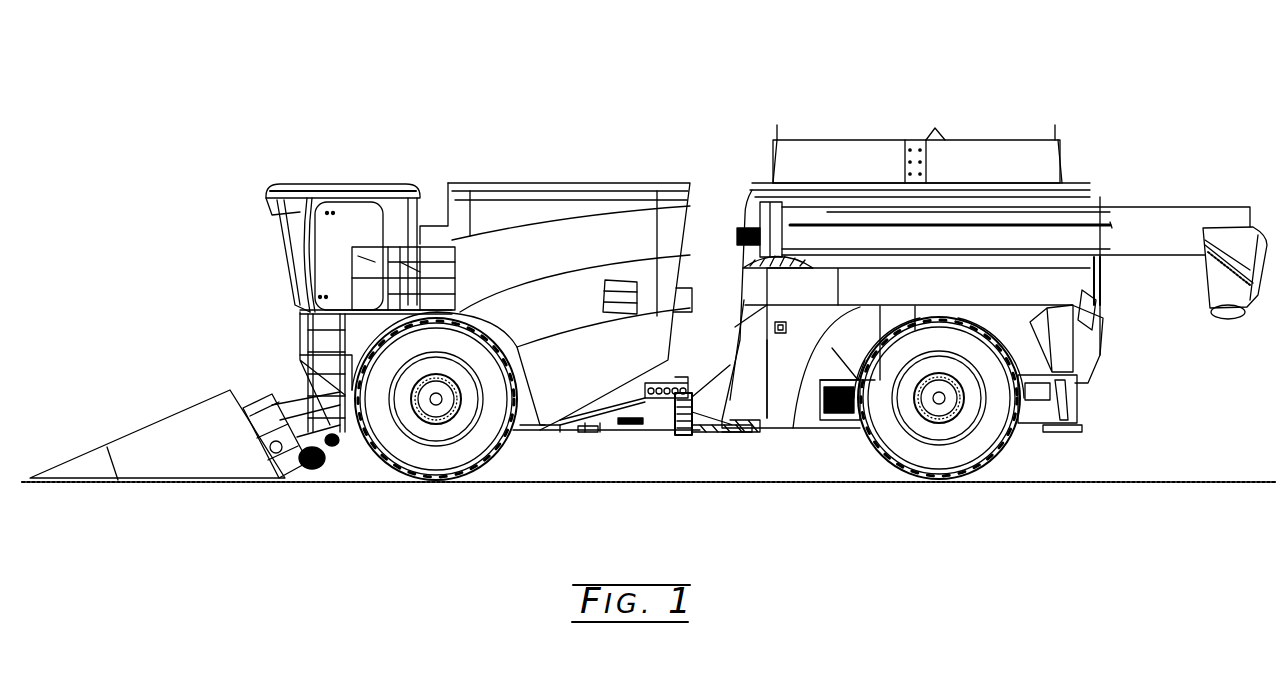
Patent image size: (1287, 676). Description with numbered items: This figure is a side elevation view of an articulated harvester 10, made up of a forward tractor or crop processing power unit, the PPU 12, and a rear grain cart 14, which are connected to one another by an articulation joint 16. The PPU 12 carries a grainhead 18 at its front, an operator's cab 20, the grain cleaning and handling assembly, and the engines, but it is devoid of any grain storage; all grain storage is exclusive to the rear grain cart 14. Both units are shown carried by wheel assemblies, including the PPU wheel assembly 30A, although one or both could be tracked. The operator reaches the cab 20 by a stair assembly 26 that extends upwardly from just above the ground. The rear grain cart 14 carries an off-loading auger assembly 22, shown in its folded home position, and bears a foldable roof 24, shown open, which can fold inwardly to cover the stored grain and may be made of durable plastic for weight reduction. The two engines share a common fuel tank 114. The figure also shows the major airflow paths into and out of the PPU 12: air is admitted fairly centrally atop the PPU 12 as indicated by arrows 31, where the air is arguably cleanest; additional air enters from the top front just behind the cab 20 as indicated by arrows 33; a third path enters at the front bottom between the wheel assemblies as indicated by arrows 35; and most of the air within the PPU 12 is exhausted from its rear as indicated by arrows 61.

The articulated harvester 10 is at (635, 80).
The PPU 12 is at (280, 116).
The rear grain cart 14 is at (1105, 145).
The articulation joint 16 is at (610, 445).
The grainhead 18 is at (185, 416).
The operator's cab 20 is at (357, 190).
The off-loading auger assembly 22 is at (1143, 222).
The foldable roof 24 is at (838, 152).
The stair assembly 26 is at (312, 350).
The PPU wheel assembly 30A is at (430, 465).
The arrows 31 is at (573, 172).
The arrows 33 is at (444, 210).
The arrows 35 is at (366, 470).
The arrows 61 is at (705, 372).
The common fuel tank 114 is at (783, 357).